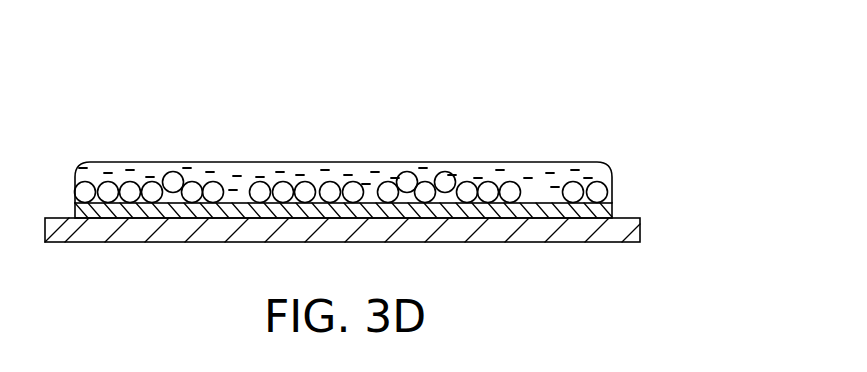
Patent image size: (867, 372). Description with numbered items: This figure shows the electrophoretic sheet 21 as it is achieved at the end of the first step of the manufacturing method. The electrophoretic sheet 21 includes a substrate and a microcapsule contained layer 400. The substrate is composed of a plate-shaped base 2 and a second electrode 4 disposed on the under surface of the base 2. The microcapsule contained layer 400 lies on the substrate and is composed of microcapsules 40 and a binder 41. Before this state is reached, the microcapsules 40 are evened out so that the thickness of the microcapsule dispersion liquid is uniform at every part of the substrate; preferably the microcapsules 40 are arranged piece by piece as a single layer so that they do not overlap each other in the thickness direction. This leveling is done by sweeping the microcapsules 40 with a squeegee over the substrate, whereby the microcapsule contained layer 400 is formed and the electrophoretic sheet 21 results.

The electrophoretic sheet 21 is at (664, 142).
The base 2 is at (628, 234).
The second electrode 4 is at (614, 210).
The microcapsule contained layer 400 is at (619, 162).
The microcapsules 40 is at (447, 171).
The binder 41 is at (558, 172).